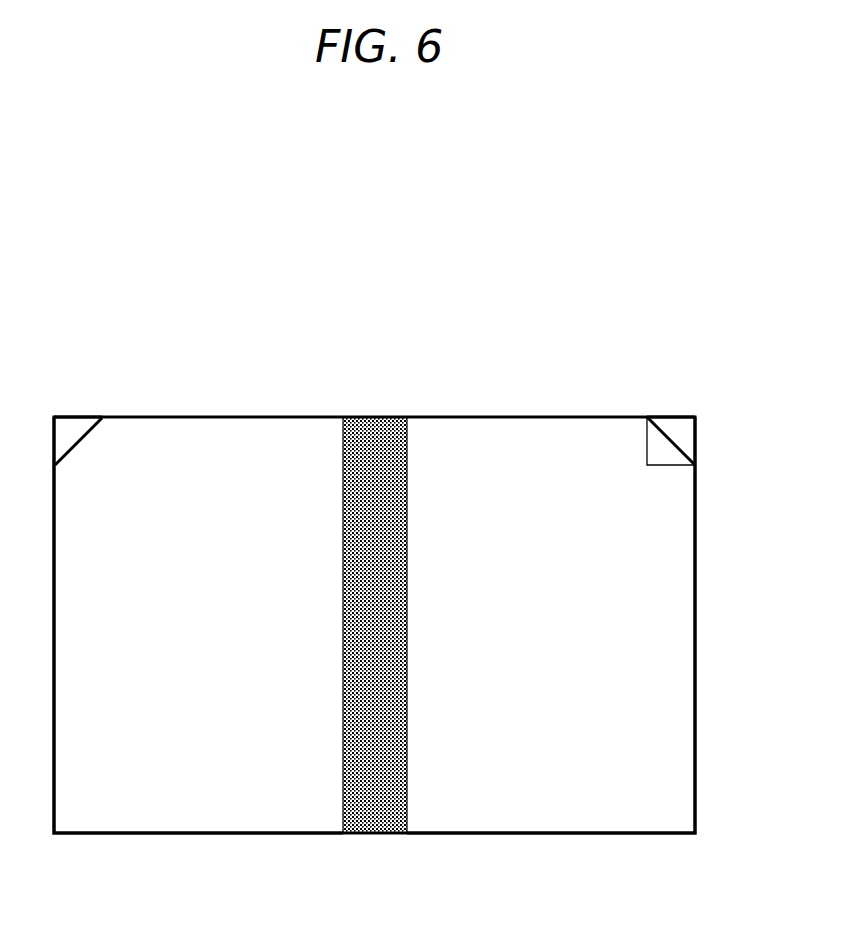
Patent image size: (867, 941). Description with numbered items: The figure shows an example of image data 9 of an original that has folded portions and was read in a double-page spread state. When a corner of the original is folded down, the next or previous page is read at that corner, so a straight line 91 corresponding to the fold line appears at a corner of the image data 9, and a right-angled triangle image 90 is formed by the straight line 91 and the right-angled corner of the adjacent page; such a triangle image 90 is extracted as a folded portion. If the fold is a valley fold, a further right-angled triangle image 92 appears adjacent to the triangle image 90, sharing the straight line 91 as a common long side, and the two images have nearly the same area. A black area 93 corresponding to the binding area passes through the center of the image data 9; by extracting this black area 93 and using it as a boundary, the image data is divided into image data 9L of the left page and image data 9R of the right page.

The image data of the original 9 is at (560, 398).
The image data of the left page 9L is at (198, 810).
The image data of the right page 9R is at (537, 810).
The right-angled triangle image 90 is at (75, 420).
The straight line 91 is at (82, 440).
The right-angled triangle image 92 is at (660, 458).
The black area 93 is at (392, 422).